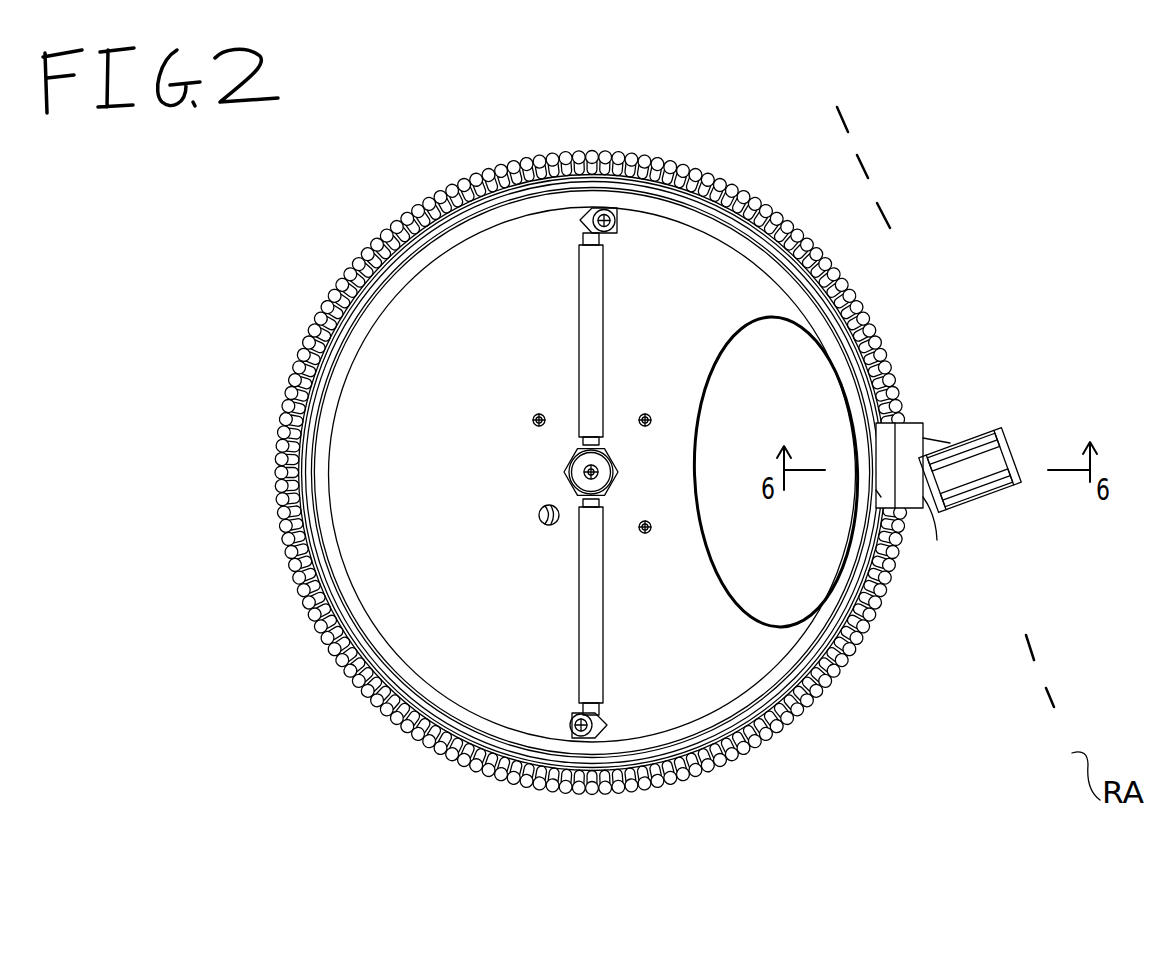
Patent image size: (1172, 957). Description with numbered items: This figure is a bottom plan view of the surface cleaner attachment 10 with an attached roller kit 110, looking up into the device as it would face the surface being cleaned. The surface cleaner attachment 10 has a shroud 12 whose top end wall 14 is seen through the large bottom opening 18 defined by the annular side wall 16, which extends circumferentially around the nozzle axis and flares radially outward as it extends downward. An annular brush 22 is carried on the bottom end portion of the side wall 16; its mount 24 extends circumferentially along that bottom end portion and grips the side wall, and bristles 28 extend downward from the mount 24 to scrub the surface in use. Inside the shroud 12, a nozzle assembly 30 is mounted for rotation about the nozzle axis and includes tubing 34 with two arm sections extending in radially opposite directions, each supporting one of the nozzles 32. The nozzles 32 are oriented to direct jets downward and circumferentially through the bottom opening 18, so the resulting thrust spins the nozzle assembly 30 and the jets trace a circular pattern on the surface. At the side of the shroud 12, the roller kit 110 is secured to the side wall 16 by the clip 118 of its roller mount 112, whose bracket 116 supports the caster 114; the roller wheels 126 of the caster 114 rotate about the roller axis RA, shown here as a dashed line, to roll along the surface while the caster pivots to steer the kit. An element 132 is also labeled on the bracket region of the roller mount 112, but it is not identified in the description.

The surface cleaner attachment 10 is at (236, 786).
The shroud 12 is at (575, 498).
The top end wall 14 is at (428, 303).
The annular side wall 16 is at (668, 747).
The bottom opening 18 is at (422, 693).
The annular brush 22 is at (573, 494).
The mount 24 is at (300, 478).
The bristles 28 is at (573, 511).
The nozzle assembly 30 is at (558, 473).
The nozzles 32 is at (617, 216).
The tubing 34 is at (606, 346).
The roller kit 110 is at (1011, 476).
The roller mount 112 is at (933, 409).
The caster 114 is at (986, 432).
The bracket 116 is at (938, 542).
The clip 118 is at (880, 427).
The roller wheels 126 is at (987, 445).
The pin 132 is at (880, 495).